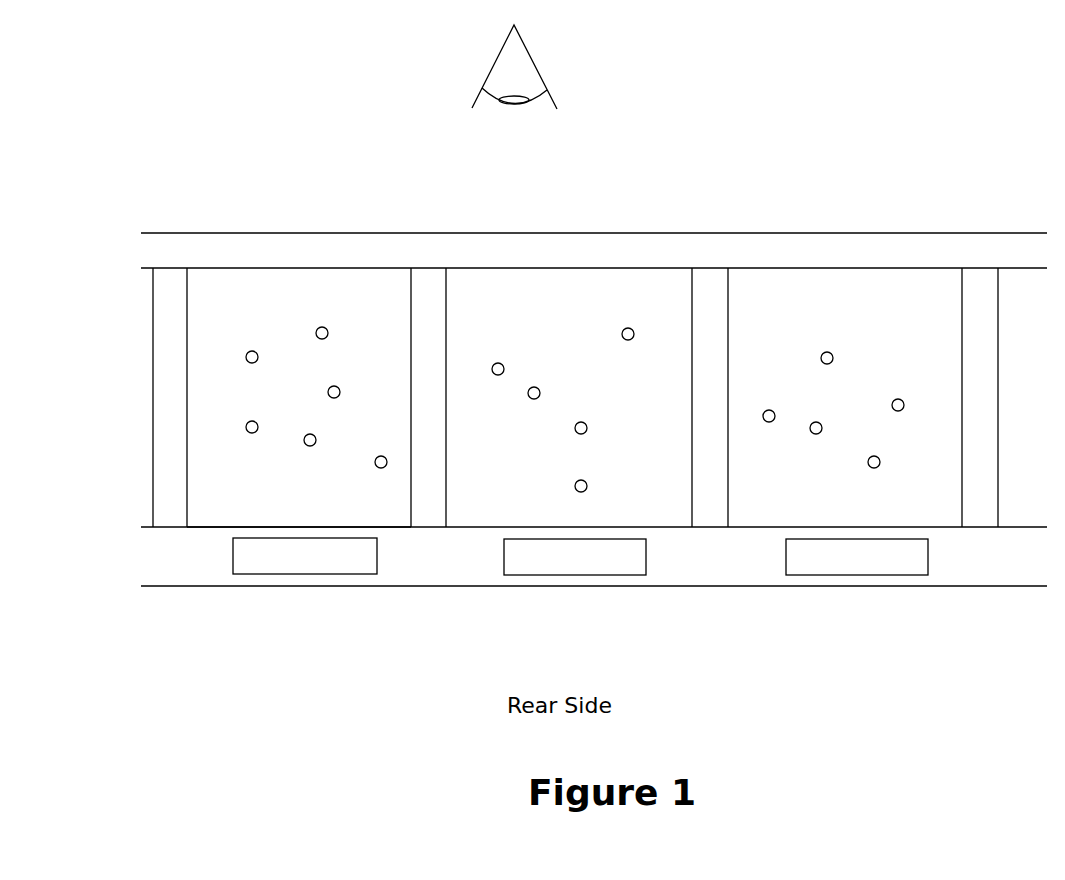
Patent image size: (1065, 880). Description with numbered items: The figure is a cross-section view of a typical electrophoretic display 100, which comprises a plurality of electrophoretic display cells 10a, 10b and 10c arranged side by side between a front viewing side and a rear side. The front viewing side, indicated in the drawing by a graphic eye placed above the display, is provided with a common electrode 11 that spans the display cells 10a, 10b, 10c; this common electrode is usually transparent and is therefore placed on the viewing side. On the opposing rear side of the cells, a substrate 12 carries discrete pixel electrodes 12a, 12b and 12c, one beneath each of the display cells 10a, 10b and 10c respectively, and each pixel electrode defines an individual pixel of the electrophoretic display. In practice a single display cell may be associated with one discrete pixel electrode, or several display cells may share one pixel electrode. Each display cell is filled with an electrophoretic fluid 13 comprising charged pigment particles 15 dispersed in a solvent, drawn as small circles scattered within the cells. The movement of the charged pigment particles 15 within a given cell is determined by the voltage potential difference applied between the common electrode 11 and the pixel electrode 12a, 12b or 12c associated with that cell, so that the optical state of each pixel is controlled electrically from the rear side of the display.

The electrophoretic display 100 is at (716, 190).
The common electrode 11 is at (199, 232).
The substrate 12 is at (163, 572).
The electrophoretic fluid 13 is at (213, 398).
The charged pigment particles 15 is at (316, 322).
The electrophoretic display cell 10a is at (210, 514).
The electrophoretic display cell 10b is at (482, 515).
The electrophoretic display cell 10c is at (763, 515).
The pixel electrode 12a is at (304, 573).
The pixel electrode 12b is at (575, 574).
The pixel electrode 12c is at (857, 574).